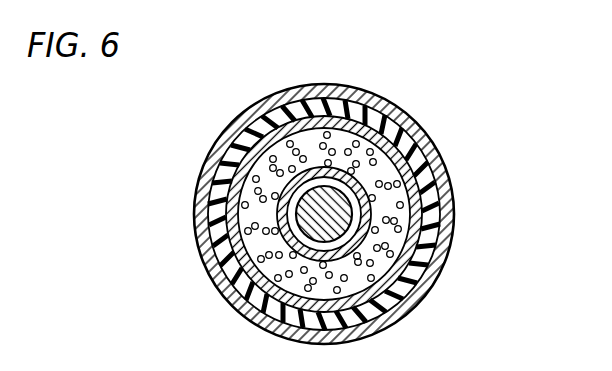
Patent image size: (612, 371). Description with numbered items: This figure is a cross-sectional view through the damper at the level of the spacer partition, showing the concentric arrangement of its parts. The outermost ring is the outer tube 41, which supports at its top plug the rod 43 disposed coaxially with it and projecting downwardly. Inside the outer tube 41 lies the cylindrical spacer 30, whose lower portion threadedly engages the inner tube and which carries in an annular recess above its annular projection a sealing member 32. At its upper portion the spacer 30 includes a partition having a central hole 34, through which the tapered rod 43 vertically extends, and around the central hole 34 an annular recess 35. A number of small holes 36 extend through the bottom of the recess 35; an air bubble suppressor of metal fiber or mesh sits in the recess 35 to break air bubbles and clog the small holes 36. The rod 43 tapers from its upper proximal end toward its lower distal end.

The cylindrical spacer 30 is at (281, 284).
The sealing member 32 is at (430, 176).
The central hole 34 is at (353, 223).
The annular recess 35 is at (423, 177).
The small holes 36 is at (360, 153).
The outer tube 41 is at (455, 208).
The rod 43 is at (313, 200).